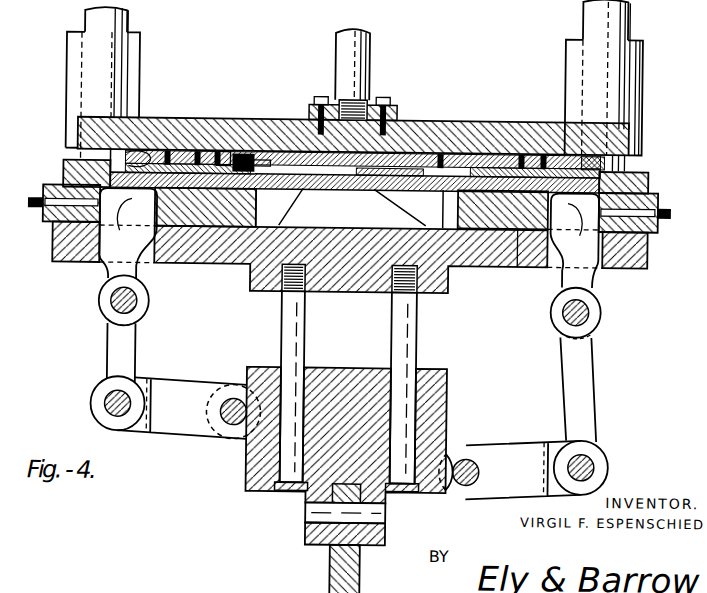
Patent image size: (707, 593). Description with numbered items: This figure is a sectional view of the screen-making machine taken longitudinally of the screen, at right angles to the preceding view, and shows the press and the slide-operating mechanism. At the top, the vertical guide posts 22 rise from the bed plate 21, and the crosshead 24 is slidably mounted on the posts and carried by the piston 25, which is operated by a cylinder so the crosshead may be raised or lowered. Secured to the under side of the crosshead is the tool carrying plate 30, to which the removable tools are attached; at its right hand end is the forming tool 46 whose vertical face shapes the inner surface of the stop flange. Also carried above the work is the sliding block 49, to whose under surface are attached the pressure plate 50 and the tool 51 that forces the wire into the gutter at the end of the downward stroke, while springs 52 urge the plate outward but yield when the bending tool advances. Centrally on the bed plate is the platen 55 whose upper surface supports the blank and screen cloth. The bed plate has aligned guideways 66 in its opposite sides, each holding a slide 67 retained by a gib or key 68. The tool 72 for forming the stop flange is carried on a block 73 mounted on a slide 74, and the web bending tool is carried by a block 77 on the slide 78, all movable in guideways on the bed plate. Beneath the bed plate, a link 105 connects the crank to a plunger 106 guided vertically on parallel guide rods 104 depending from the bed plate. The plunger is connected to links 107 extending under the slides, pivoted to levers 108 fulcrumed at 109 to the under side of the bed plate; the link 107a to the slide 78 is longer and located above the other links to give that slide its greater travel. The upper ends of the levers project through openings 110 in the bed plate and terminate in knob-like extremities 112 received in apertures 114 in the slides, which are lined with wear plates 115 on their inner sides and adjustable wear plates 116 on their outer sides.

The bed plate 21 is at (502, 257).
The vertical guide posts 22 is at (125, 22).
The crosshead 24 is at (498, 121).
The piston 25 is at (358, 57).
The tool carrying plate 30 is at (398, 156).
The forming tool 46 is at (536, 153).
The block 49 is at (218, 152).
The pressure plate 50 is at (266, 207).
The tool 51 is at (186, 151).
The springs 52 is at (253, 158).
The platen 55 is at (390, 210).
The guideways 66 is at (284, 201).
The slide 67 is at (355, 212).
The gib or key 68 is at (425, 209).
The tool for forming the stop flange 72 is at (602, 163).
The block 73 is at (648, 173).
The slide 74 is at (514, 219).
The block 77 is at (64, 166).
The slide 78 is at (194, 221).
The guide rods 104 is at (409, 350).
The link 105 is at (366, 574).
The plunger 106 is at (443, 398).
The links 107 is at (498, 438).
The link 107a is at (188, 386).
The levers 108 is at (134, 344).
The fulcrum 109 is at (122, 308).
The openings 110 is at (106, 258).
The knob-like extremities 112 is at (122, 218).
The apertures 114 is at (55, 236).
The wear plates 115 is at (157, 210).
The adjustable wear plates 116 is at (103, 213).